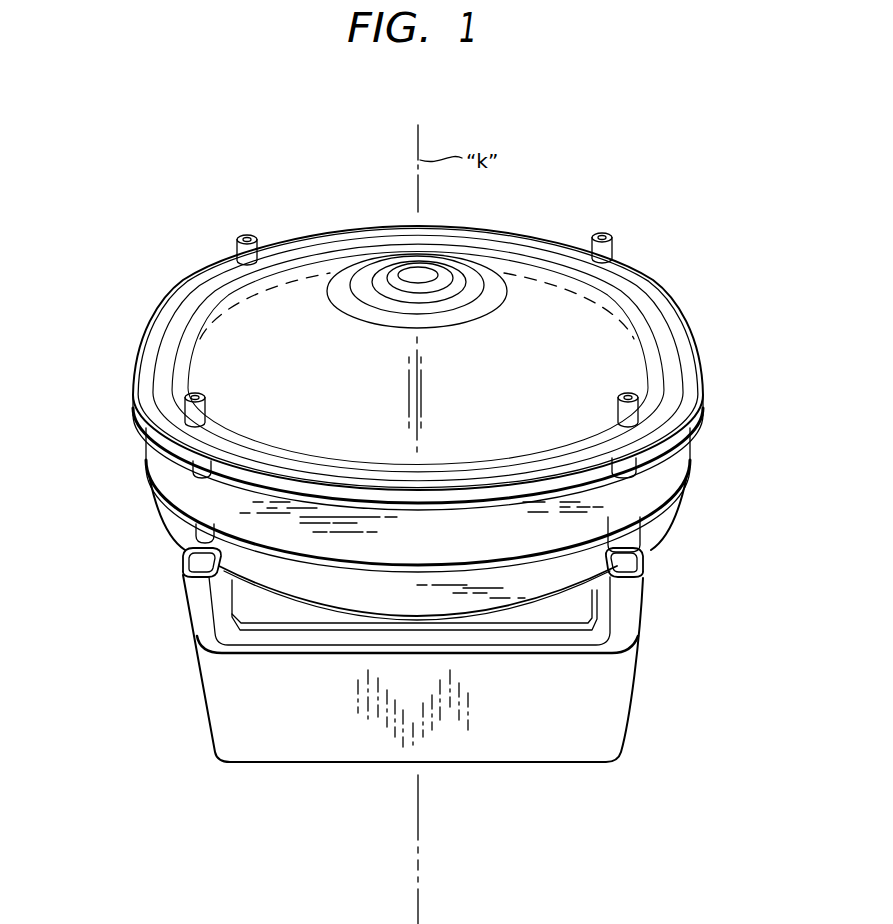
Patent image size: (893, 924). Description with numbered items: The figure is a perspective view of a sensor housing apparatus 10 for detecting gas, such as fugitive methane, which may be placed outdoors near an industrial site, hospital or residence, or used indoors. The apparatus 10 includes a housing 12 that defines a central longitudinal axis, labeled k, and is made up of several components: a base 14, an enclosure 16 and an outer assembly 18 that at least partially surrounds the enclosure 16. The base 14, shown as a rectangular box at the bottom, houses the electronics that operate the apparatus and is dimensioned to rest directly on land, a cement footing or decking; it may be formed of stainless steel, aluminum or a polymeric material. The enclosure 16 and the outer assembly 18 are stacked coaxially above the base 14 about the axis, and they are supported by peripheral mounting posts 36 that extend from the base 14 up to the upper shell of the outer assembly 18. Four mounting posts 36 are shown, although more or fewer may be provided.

The sensor housing apparatus 10 is at (131, 645).
The housing 12 is at (672, 592).
The base 14 is at (607, 717).
The enclosure 16 is at (708, 446).
The outer assembly 18 is at (106, 335).
The peripheral mounting posts 36 is at (238, 253).